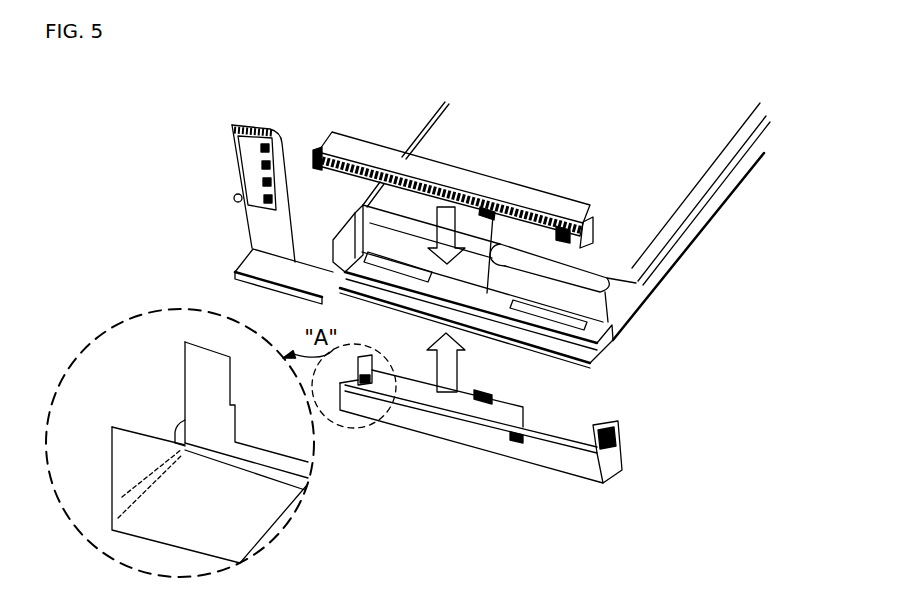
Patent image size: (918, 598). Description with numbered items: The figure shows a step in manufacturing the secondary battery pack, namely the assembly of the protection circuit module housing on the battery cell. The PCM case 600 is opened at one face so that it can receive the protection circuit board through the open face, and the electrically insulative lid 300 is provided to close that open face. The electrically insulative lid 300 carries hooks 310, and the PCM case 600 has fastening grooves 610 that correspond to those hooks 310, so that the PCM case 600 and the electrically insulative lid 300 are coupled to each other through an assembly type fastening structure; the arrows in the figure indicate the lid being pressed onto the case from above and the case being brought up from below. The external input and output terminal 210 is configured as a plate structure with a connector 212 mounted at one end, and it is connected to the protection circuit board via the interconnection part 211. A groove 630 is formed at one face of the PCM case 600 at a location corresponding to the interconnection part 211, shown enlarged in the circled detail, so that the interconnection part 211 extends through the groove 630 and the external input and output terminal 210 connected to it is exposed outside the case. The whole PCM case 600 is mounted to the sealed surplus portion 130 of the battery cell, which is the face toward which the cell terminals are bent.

The sealed surplus portion 130 is at (610, 267).
The external input and output terminal 210 is at (150, 138).
The interconnection part 211 is at (247, 269).
The connector 212 is at (248, 170).
The electrically insulative lid 300 is at (473, 182).
The hooks 310 is at (488, 211).
The PCM case 600 is at (498, 442).
The fastening grooves 610 is at (513, 442).
The groove 630 is at (148, 461).